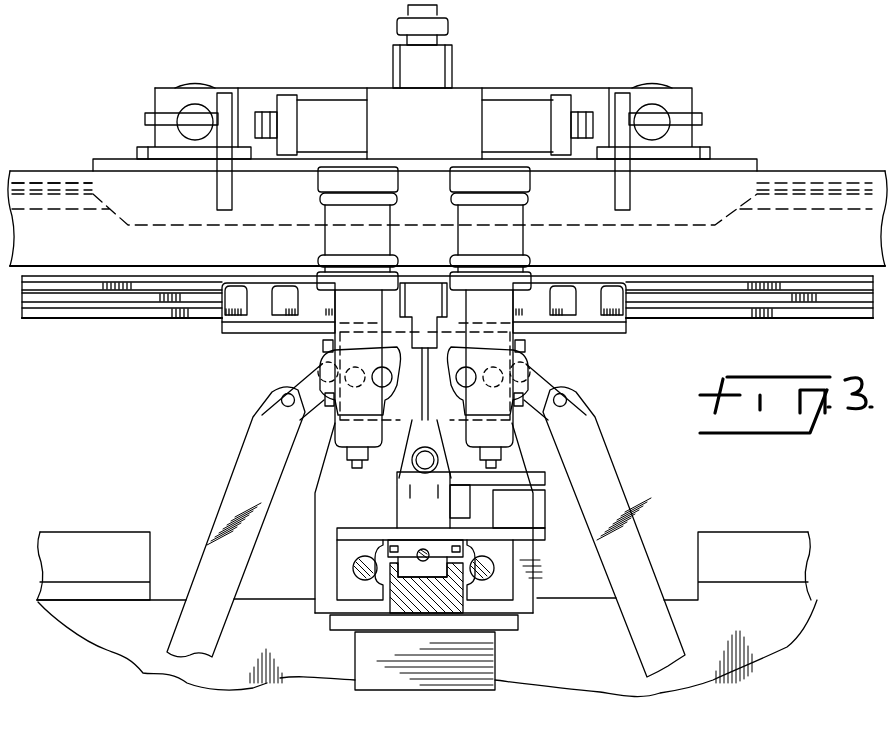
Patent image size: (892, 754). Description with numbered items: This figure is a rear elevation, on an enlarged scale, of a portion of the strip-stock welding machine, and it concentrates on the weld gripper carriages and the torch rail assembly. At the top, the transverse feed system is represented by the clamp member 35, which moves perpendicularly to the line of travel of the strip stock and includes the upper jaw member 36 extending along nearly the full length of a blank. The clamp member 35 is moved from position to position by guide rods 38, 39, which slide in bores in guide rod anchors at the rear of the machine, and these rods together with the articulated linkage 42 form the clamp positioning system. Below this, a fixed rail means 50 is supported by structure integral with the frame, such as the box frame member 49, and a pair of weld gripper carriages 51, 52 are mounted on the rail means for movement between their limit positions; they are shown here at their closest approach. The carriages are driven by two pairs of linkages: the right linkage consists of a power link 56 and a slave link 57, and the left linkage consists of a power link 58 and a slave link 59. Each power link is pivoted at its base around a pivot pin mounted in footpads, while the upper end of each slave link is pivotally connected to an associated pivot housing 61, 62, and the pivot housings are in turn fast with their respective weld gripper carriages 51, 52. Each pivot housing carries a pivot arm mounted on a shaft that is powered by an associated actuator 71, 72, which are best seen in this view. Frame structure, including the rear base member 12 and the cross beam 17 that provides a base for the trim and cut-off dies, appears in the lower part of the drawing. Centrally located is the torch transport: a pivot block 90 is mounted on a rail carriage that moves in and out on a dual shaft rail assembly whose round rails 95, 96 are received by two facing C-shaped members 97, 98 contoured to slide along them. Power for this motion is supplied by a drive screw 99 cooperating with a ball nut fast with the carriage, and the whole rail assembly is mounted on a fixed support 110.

The rear base member 12 is at (815, 162).
The cross beam 17 is at (125, 637).
The clamp member 35 is at (744, 156).
The upper jaw member 36 is at (118, 158).
The guide rod 38 is at (654, 105).
The guide rod 39 is at (195, 105).
The articulated linkage 42 is at (449, 25).
The box frame member 49 is at (57, 172).
The fixed rail means 50 is at (118, 323).
The weld gripper carriage 51 is at (242, 336).
The weld gripper carriage 52 is at (608, 337).
The power link 56 is at (240, 487).
The slave link 57 is at (297, 387).
The power link 58 is at (635, 542).
The slave link 59 is at (553, 388).
The pivot housing 61 is at (503, 349).
The pivot housing 62 is at (345, 349).
The actuator 71 is at (524, 242).
The actuator 72 is at (326, 239).
The pivot block 90 is at (808, 750).
The rail 95 is at (352, 568).
The rail 96 is at (495, 568).
The C-shaped member 97 is at (352, 590).
The C-shaped member 98 is at (500, 590).
The drive screw 99 is at (425, 551).
The fixed support 110 is at (445, 677).